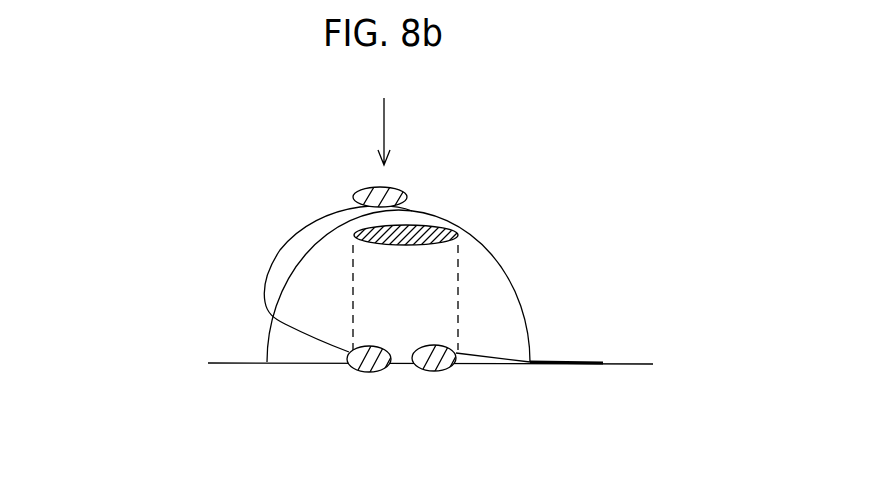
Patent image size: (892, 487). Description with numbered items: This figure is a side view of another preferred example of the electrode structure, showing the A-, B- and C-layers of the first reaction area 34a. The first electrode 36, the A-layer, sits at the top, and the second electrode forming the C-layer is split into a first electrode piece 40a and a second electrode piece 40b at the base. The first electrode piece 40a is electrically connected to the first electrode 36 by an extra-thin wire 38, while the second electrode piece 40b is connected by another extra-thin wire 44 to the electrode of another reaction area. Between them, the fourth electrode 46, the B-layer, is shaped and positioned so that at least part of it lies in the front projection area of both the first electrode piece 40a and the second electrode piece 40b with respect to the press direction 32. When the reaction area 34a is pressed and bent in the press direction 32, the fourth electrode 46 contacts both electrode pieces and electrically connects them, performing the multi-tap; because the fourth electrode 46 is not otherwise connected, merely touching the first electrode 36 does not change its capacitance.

The press direction 32 is at (385, 123).
The first reaction area 34a is at (240, 215).
The first electrode 36 is at (393, 190).
The fourth electrode 46 is at (450, 223).
The extra-thin wire 38 is at (262, 287).
The first electrode piece 40a is at (368, 373).
The second electrode piece 40b is at (433, 373).
The extra-thin wire 44 is at (607, 366).